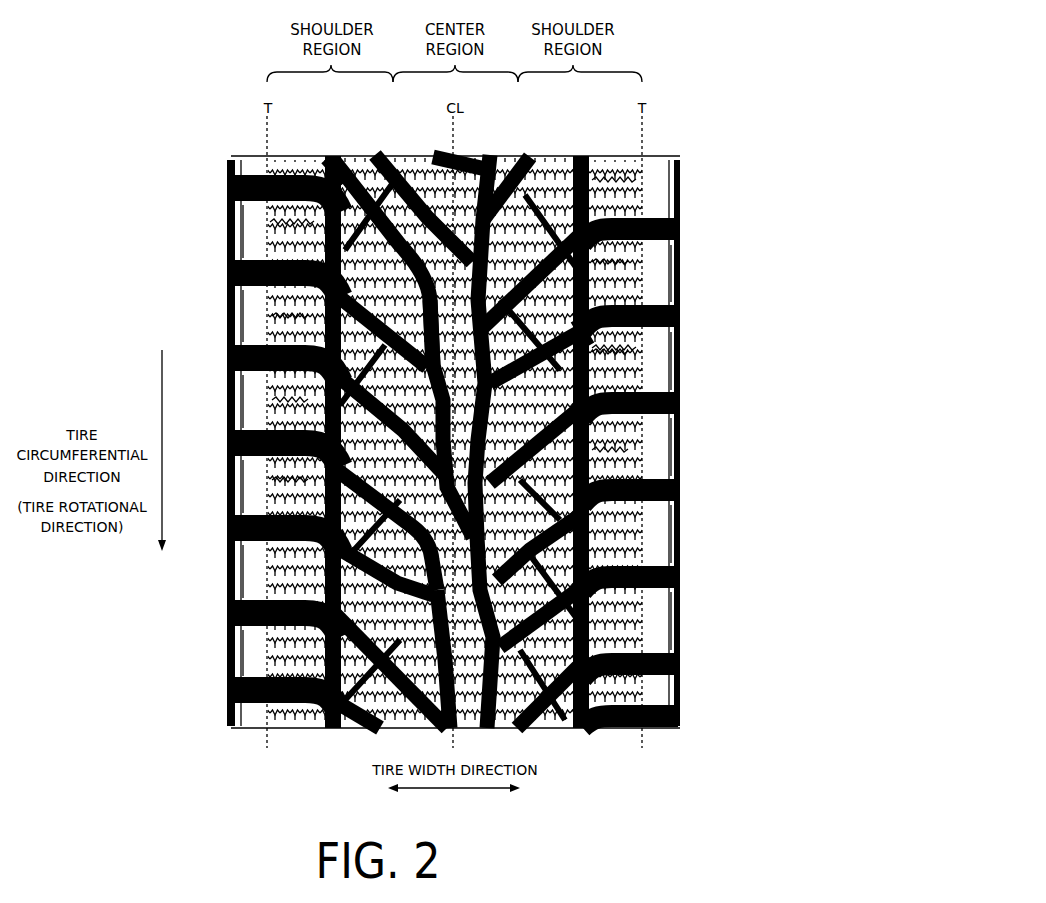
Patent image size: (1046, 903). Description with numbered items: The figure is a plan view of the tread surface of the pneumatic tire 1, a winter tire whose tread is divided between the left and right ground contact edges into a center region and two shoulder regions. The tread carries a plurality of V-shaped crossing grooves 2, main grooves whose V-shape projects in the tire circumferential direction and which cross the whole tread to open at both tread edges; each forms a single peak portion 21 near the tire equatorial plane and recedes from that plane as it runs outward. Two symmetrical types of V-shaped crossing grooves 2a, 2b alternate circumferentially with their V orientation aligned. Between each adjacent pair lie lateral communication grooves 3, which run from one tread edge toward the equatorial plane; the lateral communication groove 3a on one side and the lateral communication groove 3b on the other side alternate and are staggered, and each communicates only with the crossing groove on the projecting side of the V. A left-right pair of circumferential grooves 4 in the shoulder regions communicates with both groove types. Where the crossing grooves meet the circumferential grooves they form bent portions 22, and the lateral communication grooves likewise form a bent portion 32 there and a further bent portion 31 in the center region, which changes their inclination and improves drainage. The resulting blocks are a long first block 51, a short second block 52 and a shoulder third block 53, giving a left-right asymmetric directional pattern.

The pneumatic tire 1 is at (670, 84).
The V-shaped crossing grooves 2 is at (681, 226).
The V-shaped crossing groove 2a is at (630, 366).
The V-shaped crossing groove 2b is at (630, 565).
The lateral communication grooves 3 is at (236, 180).
The lateral communication groove 3a is at (630, 453).
The lateral communication groove 3b is at (284, 451).
The circumferential grooves 4 is at (333, 156).
The peak portion 21 is at (420, 388).
The bent portions 22 is at (298, 226).
The bent portion 31 is at (388, 282).
The bent portion 32 is at (330, 192).
The first block 51 is at (345, 420).
The second block 52 is at (336, 316).
The third block 53 is at (240, 312).